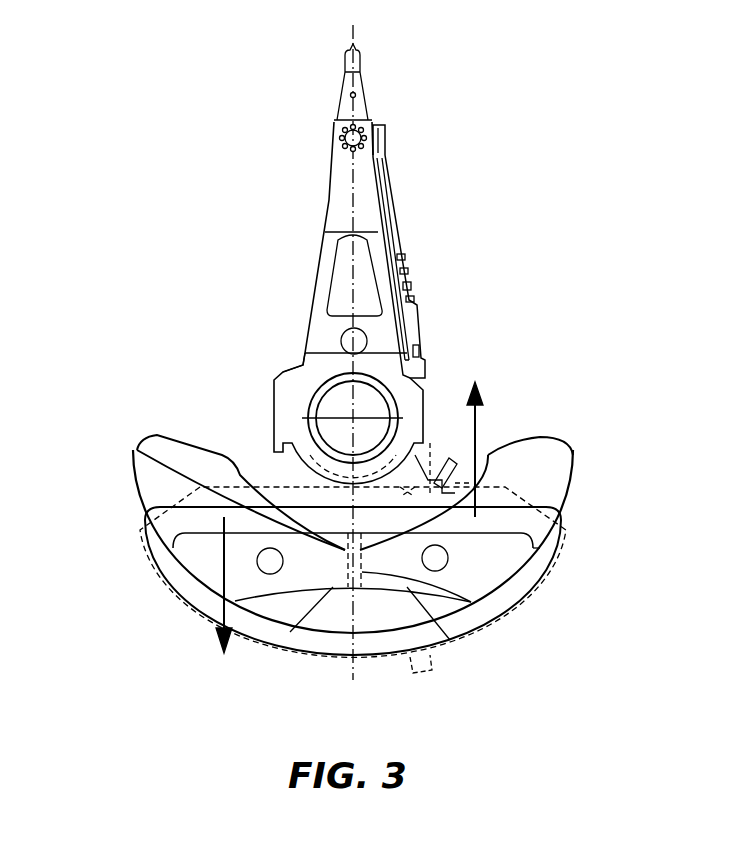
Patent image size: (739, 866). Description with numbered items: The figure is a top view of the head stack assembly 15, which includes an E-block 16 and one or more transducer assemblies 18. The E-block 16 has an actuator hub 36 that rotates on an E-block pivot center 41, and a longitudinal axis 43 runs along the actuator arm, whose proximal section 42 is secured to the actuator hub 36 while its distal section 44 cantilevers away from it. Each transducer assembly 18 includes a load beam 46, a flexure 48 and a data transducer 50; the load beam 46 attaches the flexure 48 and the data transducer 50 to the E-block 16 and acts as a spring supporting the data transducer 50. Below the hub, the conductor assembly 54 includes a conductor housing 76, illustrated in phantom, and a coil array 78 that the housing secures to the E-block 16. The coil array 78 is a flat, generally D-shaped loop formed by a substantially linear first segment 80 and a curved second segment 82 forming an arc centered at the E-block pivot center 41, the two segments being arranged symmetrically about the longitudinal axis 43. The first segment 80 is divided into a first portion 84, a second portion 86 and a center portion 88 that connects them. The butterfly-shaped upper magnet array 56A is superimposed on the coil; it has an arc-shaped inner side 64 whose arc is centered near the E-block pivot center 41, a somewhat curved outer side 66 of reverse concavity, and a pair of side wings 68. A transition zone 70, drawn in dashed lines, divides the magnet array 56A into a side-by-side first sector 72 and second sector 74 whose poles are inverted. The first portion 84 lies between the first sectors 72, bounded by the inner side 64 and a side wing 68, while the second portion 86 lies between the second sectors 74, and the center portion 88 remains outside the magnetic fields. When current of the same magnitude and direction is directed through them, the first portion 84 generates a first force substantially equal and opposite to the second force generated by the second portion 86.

The head stack assembly 15 is at (348, 366).
The E-block 16 is at (380, 300).
The transducer assembly 18 is at (379, 71).
The actuator hub 36 is at (310, 393).
The E-block pivot center 41 is at (343, 423).
The proximal section 42 is at (327, 363).
The longitudinal axis 43 is at (395, 356).
The distal section 44 is at (367, 133).
The load beam 46 is at (345, 103).
The flexure 48 is at (343, 62).
The data transducer 50 is at (357, 47).
The conductor assembly 54 is at (342, 572).
The upper magnet array 56A is at (178, 561).
The arc-shaped inner side 64 is at (238, 505).
The outer side 66 is at (290, 632).
The side wings 68 is at (137, 462).
The transition zone 70 is at (450, 640).
The first sector 72 is at (289, 566).
The second sector 74 is at (454, 565).
The conductor housing 76 is at (550, 488).
The coil array 78 is at (538, 577).
The first segment 80 is at (137, 455).
The second segment 82 is at (207, 597).
The first portion 84 is at (200, 520).
The second portion 86 is at (548, 518).
The center portion 88 is at (545, 541).